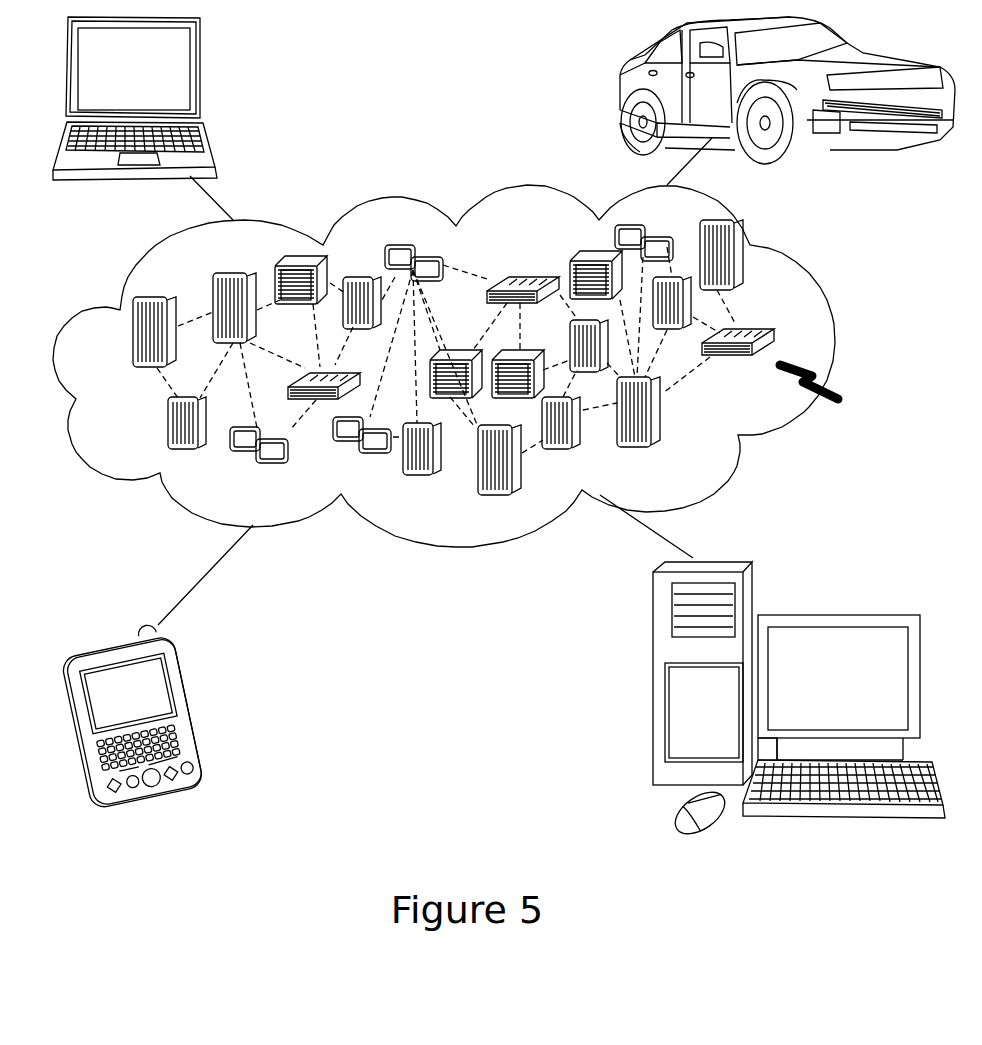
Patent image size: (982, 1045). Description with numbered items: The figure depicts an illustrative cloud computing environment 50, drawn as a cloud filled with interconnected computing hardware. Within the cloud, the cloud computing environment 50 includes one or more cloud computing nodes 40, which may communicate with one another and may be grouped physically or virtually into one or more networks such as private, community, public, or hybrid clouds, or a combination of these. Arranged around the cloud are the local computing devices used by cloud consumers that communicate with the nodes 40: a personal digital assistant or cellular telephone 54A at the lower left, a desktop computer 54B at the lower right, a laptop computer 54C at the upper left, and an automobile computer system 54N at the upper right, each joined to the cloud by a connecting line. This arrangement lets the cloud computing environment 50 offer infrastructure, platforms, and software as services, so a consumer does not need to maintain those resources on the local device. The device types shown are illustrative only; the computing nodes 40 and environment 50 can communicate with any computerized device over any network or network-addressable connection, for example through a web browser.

The cloud computing node 40 is at (829, 390).
The cloud computing environment 50 is at (833, 343).
The personal digital assistant (PDA) or cellular telephone 54A is at (195, 710).
The desktop computer 54B is at (840, 615).
The laptop computer 54C is at (200, 78).
The automobile computer system 54N is at (622, 92).